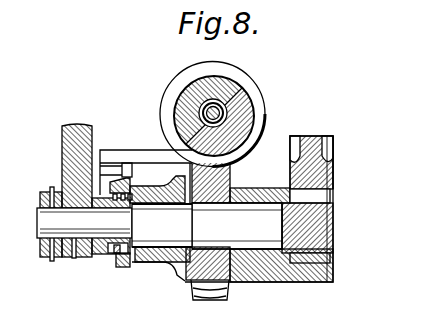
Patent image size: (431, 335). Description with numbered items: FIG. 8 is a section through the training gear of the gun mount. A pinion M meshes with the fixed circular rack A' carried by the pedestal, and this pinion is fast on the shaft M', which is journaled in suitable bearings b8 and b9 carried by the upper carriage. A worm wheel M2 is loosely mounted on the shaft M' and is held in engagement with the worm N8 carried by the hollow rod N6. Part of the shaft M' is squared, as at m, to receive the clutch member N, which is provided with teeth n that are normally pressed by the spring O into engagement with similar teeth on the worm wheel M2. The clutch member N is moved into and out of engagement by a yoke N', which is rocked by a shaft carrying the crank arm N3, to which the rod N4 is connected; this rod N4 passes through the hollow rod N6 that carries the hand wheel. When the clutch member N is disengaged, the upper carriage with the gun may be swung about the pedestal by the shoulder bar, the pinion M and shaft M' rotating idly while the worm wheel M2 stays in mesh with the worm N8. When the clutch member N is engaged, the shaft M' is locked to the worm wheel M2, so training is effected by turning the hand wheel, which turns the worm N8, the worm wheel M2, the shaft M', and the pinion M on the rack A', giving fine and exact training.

The bearing b8 is at (66, 133).
The yoke N' is at (86, 255).
The spring O is at (111, 254).
The crank arm N3 is at (147, 153).
The teeth n is at (176, 186).
The worm N8 is at (263, 118).
The rod N4 is at (222, 108).
The hollow rod N6 is at (216, 108).
The circular rack A' is at (339, 162).
The pinion M is at (285, 216).
The shaft M' is at (151, 245).
The squared part of shaft m is at (162, 225).
The clutch member N is at (161, 281).
The worm wheel M2 is at (224, 302).
The bearing b9 is at (296, 282).